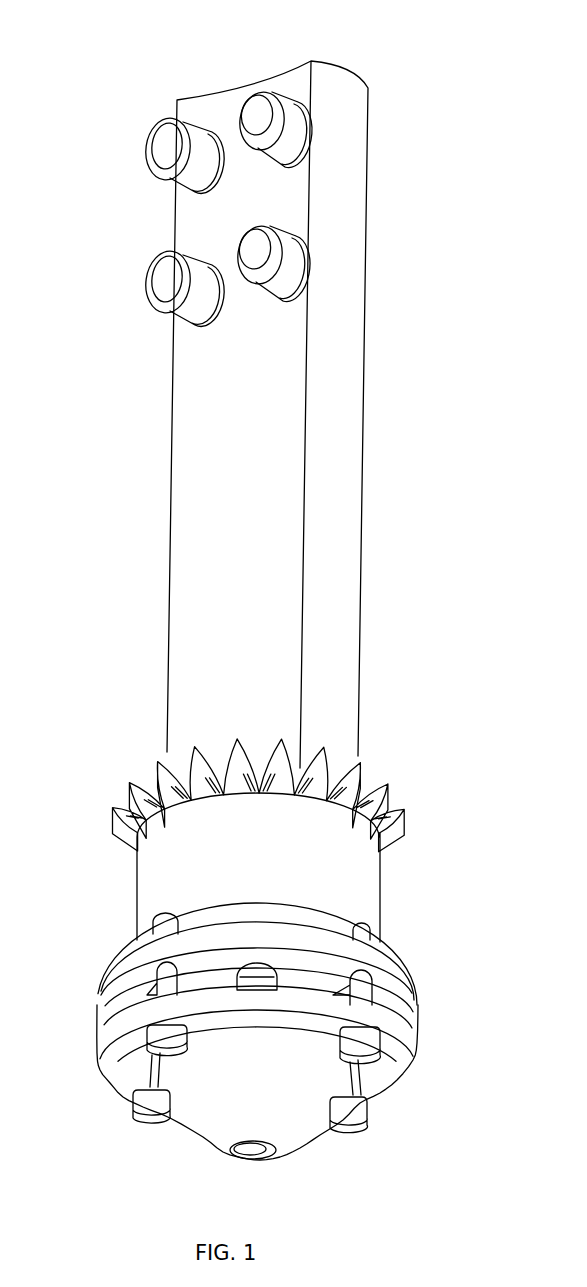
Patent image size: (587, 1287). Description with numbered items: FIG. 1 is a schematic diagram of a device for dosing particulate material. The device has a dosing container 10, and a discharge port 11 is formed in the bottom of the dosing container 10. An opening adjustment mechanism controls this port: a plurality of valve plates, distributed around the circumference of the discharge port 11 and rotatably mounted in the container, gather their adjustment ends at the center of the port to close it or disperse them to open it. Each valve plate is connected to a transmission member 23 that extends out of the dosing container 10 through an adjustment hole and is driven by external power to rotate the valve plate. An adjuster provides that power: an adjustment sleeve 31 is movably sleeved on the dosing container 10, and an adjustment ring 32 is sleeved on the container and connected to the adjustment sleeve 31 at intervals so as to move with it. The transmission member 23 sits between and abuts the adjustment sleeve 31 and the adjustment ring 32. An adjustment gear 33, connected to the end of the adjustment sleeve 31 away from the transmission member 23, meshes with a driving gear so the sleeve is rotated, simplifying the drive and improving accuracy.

The dosing container 10 is at (183, 505).
The discharge port 11 is at (255, 1157).
The transmission member 23 is at (263, 977).
The adjustment sleeve 31 is at (147, 907).
The adjustment ring 32 is at (103, 1033).
The adjustment gear 33 is at (118, 813).